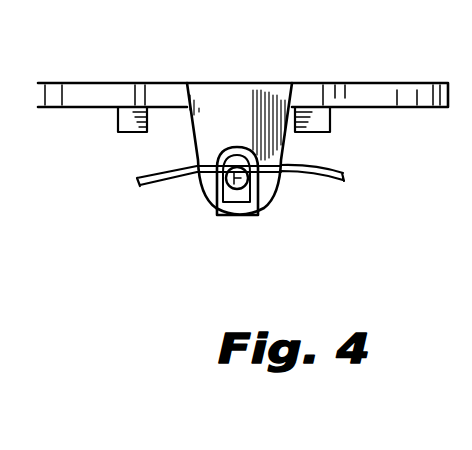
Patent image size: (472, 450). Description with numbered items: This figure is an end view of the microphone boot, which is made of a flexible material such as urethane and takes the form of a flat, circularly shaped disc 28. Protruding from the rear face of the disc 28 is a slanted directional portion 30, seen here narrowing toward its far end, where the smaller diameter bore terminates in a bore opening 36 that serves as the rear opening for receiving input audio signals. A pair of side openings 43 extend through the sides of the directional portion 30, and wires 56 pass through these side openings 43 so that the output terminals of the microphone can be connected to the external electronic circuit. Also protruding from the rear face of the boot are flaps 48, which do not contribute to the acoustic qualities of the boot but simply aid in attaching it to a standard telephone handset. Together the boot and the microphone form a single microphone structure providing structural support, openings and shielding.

The disc 28 is at (362, 83).
The flaps 48 is at (118, 131).
The slanted directional portion 30 is at (212, 205).
The bore opening 36 is at (242, 190).
The wires 56 is at (149, 185).
The side openings 43 is at (197, 176).